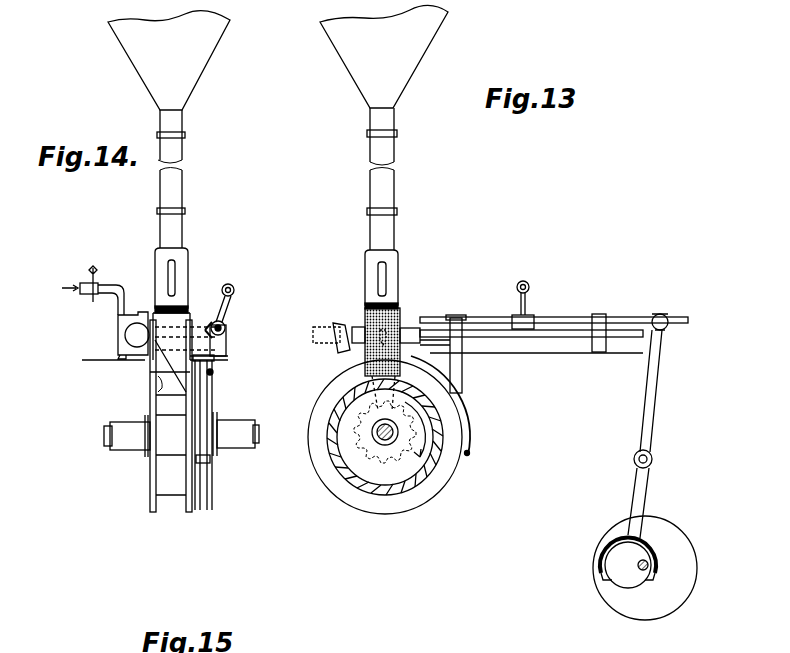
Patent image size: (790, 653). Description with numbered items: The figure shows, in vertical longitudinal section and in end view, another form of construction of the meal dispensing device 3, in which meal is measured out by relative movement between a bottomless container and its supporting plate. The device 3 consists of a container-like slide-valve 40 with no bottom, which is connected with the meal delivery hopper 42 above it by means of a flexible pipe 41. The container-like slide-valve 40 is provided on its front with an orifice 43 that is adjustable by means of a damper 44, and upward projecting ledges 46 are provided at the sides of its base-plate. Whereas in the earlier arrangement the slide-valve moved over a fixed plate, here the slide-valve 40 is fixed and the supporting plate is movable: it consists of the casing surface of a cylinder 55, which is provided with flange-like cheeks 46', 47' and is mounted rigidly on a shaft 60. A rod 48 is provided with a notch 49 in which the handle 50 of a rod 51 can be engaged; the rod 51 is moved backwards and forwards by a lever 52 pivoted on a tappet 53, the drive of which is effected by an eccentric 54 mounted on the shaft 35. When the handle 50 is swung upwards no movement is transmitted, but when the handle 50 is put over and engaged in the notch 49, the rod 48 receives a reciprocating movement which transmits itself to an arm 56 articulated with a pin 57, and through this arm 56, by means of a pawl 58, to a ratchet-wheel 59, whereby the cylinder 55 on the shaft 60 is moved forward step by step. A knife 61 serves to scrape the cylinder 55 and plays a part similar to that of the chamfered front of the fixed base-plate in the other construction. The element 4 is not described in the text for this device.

In FIG. 14, the meal dispensing device 3 is at (185, 300).
In FIG. 14, the valve body 4 is at (120, 325).
In FIG. 13, the shaft 35 is at (648, 572).
In FIG. 13, the container-like slide-valve 40 is at (365, 305).
In FIG. 13, the flexible pipe 41 is at (394, 187).
In FIG. 14, the meal delivery hopper 42 is at (212, 50).
In FIG. 13, the meal delivery hopper 42 is at (428, 52).
In FIG. 13, the orifice 43 is at (403, 372).
In FIG. 13, the damper 44 is at (402, 312).
In FIG. 13, the upward projecting ledges 46 is at (368, 437).
In FIG. 14, the flange-like cheek 46' is at (202, 536).
In FIG. 14, the flange-like cheek 47' is at (152, 536).
In FIG. 14, the rod 48 is at (226, 352).
In FIG. 13, the rod 48 is at (556, 337).
In FIG. 13, the notch 49 is at (522, 330).
In FIG. 14, the handle 50 is at (235, 290).
In FIG. 13, the handle 50 is at (520, 283).
In FIG. 14, the rod 51 is at (225, 331).
In FIG. 13, the rod 51 is at (565, 318).
In FIG. 13, the lever 52 is at (658, 395).
In FIG. 13, the tappet 53 is at (655, 460).
In FIG. 13, the eccentric 54 is at (612, 578).
In FIG. 13, the cylinder 55 is at (357, 470).
In FIG. 13, the arm 56 is at (340, 360).
In FIG. 13, the pin 57 is at (337, 322).
In FIG. 14, the pawl 58 is at (205, 398).
In FIG. 14, the ratchet-wheel 59 is at (204, 465).
In FIG. 14, the shaft 60 is at (110, 452).
In FIG. 13, the knife 61 is at (470, 452).